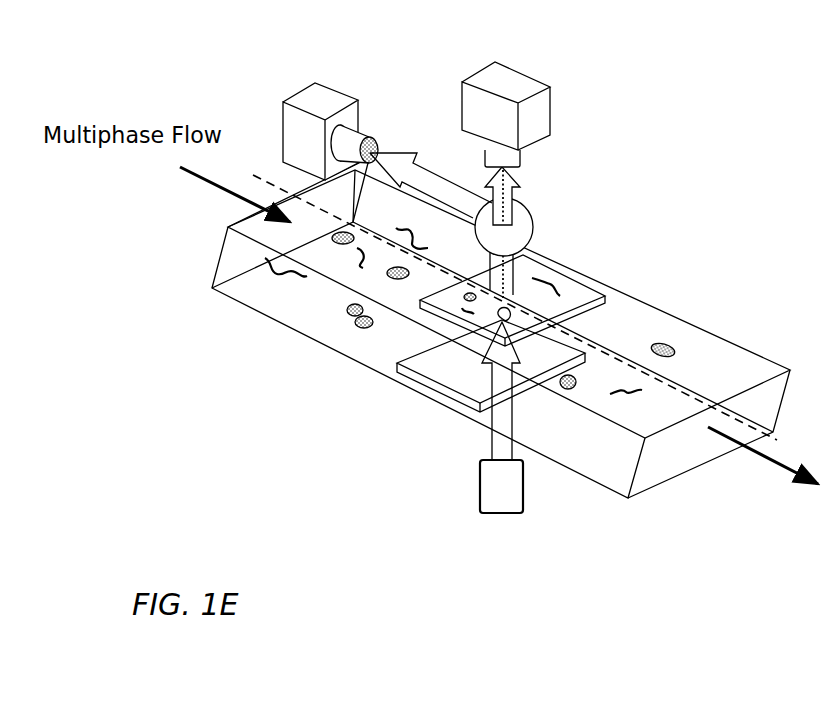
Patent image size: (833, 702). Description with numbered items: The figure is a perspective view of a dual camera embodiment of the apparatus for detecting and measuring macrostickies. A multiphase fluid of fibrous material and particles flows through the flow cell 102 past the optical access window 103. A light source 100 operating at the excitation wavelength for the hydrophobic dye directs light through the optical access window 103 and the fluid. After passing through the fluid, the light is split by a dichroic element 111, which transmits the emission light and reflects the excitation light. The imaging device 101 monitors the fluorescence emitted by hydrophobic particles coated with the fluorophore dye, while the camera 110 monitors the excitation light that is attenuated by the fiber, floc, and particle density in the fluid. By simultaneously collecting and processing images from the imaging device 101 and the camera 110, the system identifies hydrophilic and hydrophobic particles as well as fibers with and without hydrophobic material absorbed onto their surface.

The light source 100 is at (474, 497).
The imaging device 101 is at (541, 132).
The flow cell 102 is at (650, 294).
The optical access window 103 is at (579, 289).
The camera 110 is at (327, 92).
The dichroic element 111 is at (536, 209).